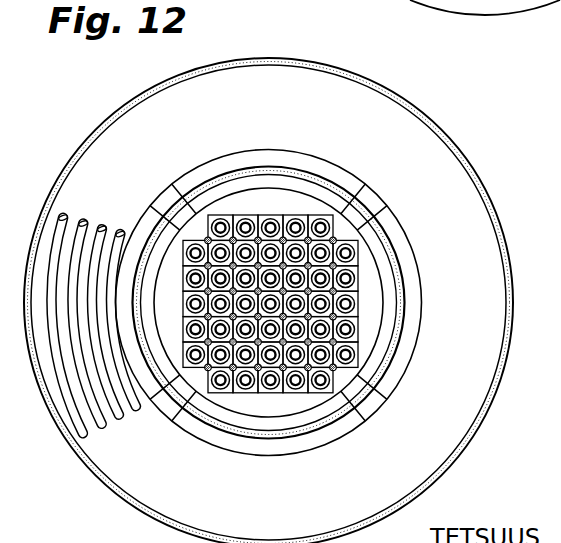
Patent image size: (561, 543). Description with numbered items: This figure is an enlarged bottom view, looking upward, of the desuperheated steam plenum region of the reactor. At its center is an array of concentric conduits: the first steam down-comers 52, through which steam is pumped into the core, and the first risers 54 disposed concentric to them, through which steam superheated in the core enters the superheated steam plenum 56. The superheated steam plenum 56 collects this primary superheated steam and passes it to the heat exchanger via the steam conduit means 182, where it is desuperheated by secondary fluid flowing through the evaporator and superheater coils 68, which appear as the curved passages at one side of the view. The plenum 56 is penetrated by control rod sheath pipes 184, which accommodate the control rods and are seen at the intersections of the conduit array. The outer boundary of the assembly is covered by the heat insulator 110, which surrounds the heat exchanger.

The first steam down-comers 52 is at (273, 305).
The first risers 54 is at (296, 222).
The superheated steam plenum 56 is at (374, 357).
The evaporator and superheater coils 68 is at (98, 424).
The heat insulator 110 is at (495, 207).
The steam conduit means 182 is at (357, 430).
The control rod sheath pipes 184 is at (337, 372).